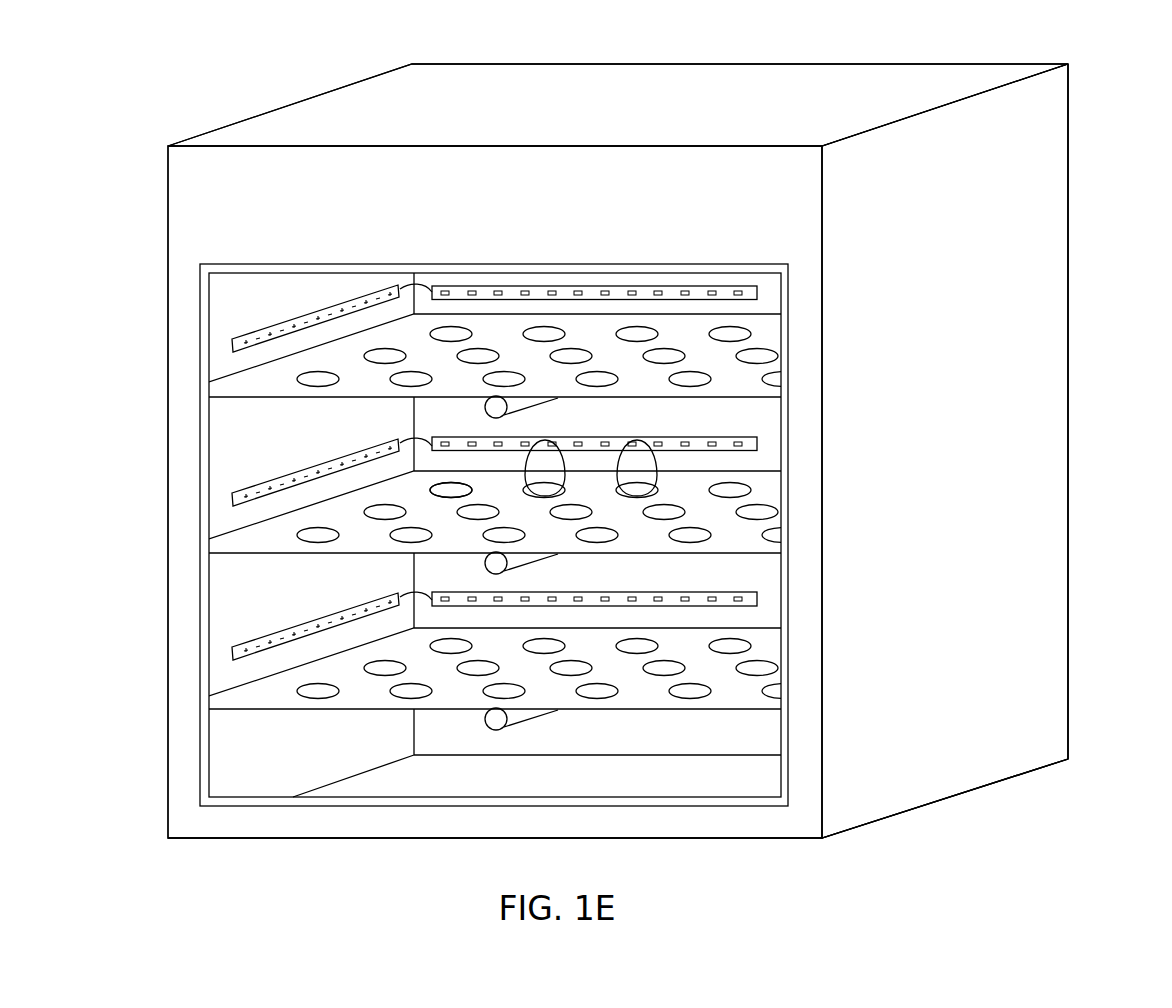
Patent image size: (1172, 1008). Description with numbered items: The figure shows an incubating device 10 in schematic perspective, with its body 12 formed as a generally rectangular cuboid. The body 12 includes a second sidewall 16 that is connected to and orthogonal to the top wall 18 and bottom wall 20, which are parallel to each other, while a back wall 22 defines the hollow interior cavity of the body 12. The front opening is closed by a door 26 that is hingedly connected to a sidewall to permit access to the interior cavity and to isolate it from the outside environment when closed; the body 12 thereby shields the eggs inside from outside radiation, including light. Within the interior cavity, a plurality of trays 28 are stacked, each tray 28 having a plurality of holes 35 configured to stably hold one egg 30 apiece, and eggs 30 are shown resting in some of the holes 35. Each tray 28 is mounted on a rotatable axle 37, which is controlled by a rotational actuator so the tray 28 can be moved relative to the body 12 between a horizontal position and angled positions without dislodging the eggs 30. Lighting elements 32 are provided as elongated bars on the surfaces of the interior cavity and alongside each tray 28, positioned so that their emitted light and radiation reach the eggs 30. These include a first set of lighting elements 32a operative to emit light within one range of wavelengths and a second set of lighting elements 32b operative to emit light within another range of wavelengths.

The incubating device 10 is at (545, 28).
The body 12 is at (167, 217).
The second sidewall 16 is at (1025, 417).
The top wall 18 is at (797, 72).
The bottom wall 20 is at (690, 840).
The back wall 22 is at (1069, 177).
The door 26 is at (656, 270).
The tray 28 is at (480, 482).
The egg 30 is at (543, 443).
The lighting element 32 is at (710, 290).
The first set of lighting elements 32a is at (265, 490).
The second set of lighting elements 32b is at (360, 458).
The hole 35 is at (442, 488).
The rotatable axle 37 is at (488, 577).